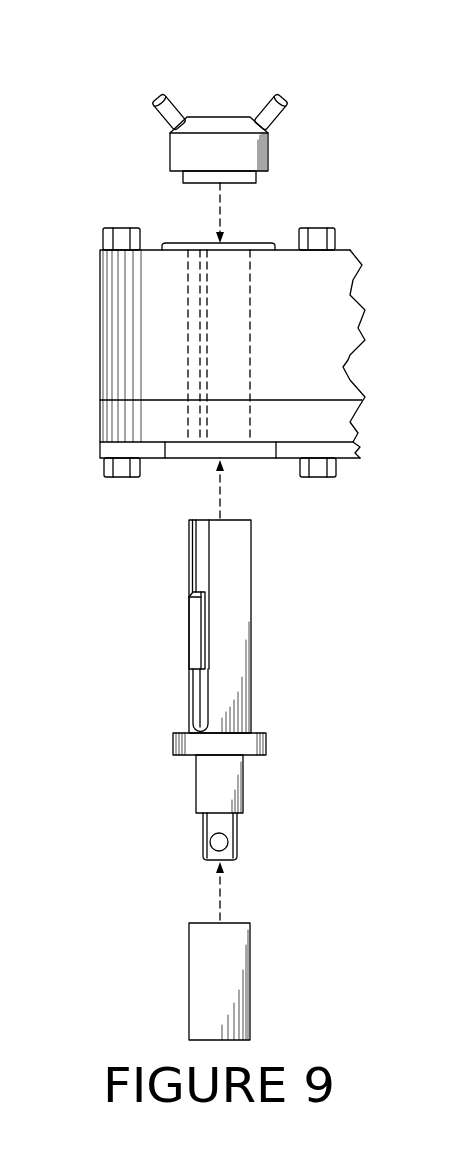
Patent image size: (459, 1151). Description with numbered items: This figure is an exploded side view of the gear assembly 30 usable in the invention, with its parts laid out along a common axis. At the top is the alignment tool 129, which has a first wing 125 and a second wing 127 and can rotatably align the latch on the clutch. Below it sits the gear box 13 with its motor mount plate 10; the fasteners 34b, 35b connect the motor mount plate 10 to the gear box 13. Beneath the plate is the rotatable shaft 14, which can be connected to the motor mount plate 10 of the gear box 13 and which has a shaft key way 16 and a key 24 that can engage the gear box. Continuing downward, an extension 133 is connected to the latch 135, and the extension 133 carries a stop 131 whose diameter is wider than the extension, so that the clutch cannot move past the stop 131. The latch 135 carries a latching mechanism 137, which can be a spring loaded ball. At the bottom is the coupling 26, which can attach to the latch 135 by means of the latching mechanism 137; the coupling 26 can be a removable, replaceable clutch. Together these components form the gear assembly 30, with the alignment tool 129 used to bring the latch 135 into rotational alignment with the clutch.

The gear assembly 30 is at (220, 68).
The first wing 125 is at (168, 113).
The second wing 127 is at (270, 117).
The alignment tool 129 is at (182, 148).
The gear box 13 is at (123, 345).
The motor mount plate 10 is at (104, 449).
The fastener 34b is at (104, 467).
The fastener 35b is at (336, 467).
The rotatable shaft 14 is at (287, 609).
The key 24 is at (192, 632).
The shaft key way 16 is at (203, 692).
The stop 131 is at (245, 742).
The extension 133 is at (208, 790).
The latch 135 is at (207, 855).
The latching mechanism 137 is at (228, 838).
The coupling 26 is at (202, 968).